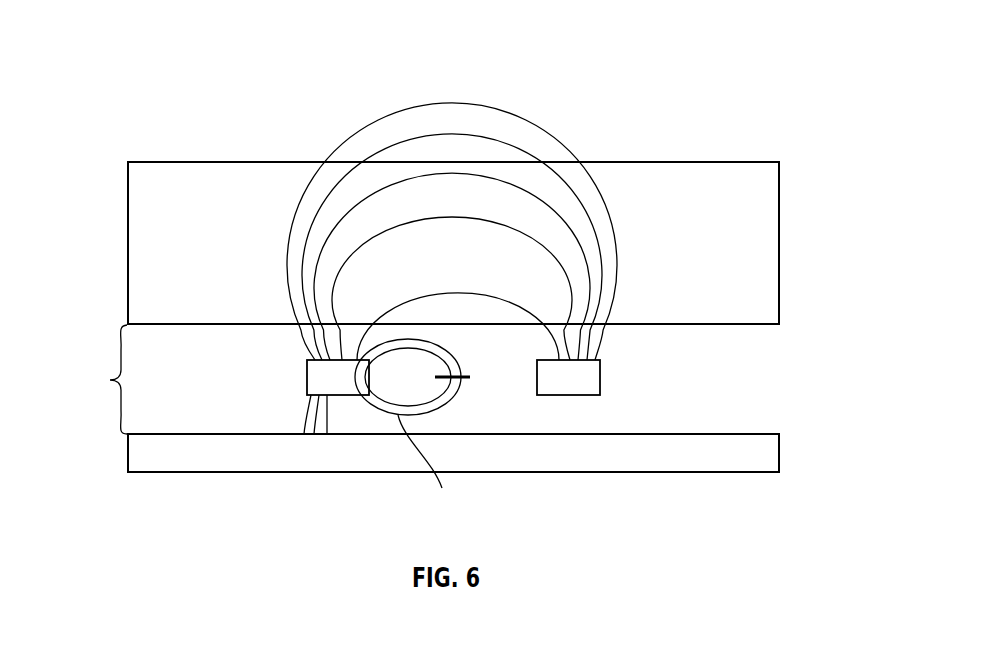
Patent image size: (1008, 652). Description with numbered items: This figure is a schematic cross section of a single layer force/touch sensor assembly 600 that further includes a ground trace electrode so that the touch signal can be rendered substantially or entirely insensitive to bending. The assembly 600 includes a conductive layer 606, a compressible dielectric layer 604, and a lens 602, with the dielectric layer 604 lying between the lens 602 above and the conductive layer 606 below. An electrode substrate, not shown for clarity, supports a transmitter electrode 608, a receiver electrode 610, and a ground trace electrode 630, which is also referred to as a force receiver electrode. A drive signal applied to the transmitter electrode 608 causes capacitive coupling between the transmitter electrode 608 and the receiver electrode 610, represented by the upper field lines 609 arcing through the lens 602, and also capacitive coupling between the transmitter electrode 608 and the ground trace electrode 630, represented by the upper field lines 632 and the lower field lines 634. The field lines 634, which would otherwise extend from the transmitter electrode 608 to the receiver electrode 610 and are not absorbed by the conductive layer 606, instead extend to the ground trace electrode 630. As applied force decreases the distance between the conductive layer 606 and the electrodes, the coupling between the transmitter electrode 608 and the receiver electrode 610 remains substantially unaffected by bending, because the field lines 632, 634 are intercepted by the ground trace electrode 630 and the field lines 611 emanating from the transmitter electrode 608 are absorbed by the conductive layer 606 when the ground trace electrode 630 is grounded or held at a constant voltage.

The single layer force/touch sensor assembly 600 is at (132, 72).
The lens 602 is at (195, 162).
The compressible dielectric layer 604 is at (98, 379).
The conductive layer 606 is at (128, 455).
The transmitter electrode 608 is at (307, 378).
The upper field lines 609 is at (599, 238).
The receiver electrode 610 is at (601, 378).
The field lines 611 is at (307, 420).
The ground trace electrode 630 is at (462, 378).
The upper field lines 632 is at (403, 340).
The lower field lines 634 is at (429, 469).